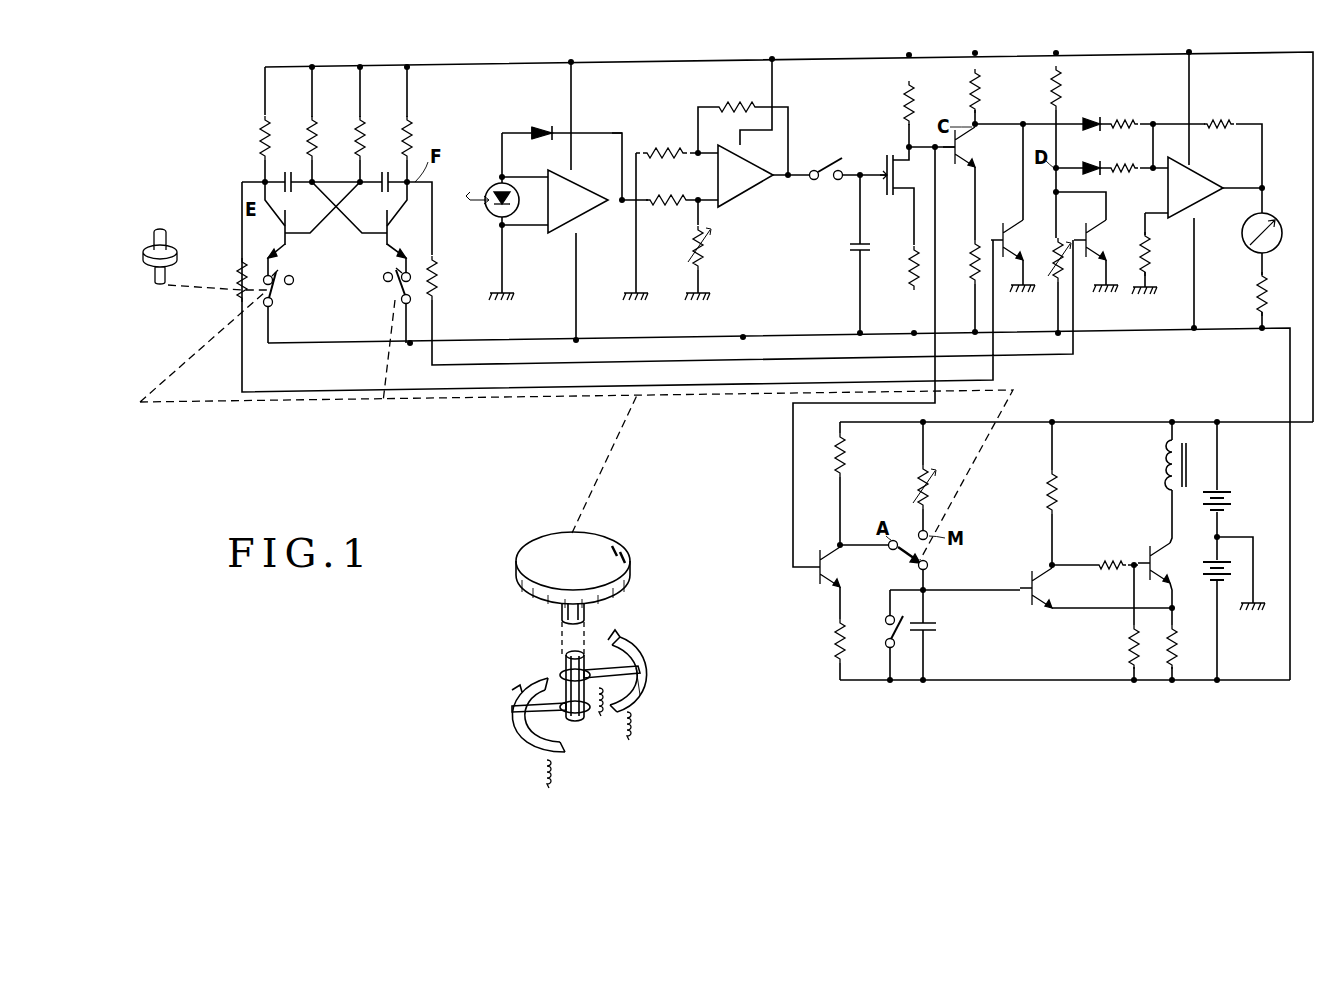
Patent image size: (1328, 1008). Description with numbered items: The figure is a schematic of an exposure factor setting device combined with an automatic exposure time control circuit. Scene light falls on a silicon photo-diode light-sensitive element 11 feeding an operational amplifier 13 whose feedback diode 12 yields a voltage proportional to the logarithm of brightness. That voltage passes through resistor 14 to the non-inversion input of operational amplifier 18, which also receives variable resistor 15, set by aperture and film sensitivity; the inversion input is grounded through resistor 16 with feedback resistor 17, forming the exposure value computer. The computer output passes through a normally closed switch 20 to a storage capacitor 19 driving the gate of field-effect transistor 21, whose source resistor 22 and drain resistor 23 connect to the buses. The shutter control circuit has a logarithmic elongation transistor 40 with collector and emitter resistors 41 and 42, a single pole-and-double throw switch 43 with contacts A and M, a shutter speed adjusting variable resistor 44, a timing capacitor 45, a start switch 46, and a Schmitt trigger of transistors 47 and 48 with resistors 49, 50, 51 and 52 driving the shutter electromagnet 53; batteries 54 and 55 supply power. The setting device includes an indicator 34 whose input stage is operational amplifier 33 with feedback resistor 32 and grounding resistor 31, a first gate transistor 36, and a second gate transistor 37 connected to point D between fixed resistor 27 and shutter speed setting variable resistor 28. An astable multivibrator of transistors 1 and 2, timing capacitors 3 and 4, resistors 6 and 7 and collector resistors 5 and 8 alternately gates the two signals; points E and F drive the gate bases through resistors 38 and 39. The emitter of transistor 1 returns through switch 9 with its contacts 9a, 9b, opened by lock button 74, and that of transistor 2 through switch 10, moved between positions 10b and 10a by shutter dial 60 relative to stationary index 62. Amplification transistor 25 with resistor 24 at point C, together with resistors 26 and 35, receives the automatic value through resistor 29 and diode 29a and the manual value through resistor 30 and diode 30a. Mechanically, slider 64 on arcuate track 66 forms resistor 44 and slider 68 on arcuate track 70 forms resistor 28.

The transistor 1 is at (290, 238).
The transistor 2 is at (384, 236).
The timing capacitor 3 is at (288, 172).
The timing capacitor 4 is at (385, 172).
The collector resistor 5 is at (262, 142).
The resistor 6 is at (315, 136).
The resistor 7 is at (362, 122).
The collector resistor 8 is at (410, 136).
The switch 9 is at (272, 300).
The switch contact 9a is at (280, 268).
The switch contact 9b is at (294, 282).
The switch 10 is at (399, 298).
The switch position 10a is at (383, 277).
The switch position 10b is at (410, 270).
The light-sensitive element 11 is at (498, 222).
The diode 12 is at (542, 124).
The operational amplifier 13 is at (578, 190).
The resistor 14 is at (664, 205).
The variable resistor 15 is at (690, 252).
The resistor 16 is at (660, 148).
The feedback resistor 17 is at (736, 100).
The operational amplifier 18 is at (750, 170).
The storage capacitor 19 is at (848, 247).
The normally closed switch 20 is at (824, 182).
The field-effect transistor 21 is at (900, 197).
The resistor 22 is at (910, 282).
The resistor 23 is at (905, 110).
The resistor 24 is at (970, 93).
The amplification transistor 25 is at (962, 151).
The resistor 26 is at (972, 282).
The fixed resistor 27 is at (1052, 90).
The variable resistor 28 is at (1052, 290).
The resistor 29 is at (1128, 118).
The diode 29a is at (1092, 118).
The resistor 30 is at (1122, 163).
The diode 30a is at (1092, 176).
The resistor 31 is at (1150, 258).
The feedback resistor 32 is at (1220, 117).
The operational amplifier 33 is at (1208, 180).
The indicator 34 is at (1275, 216).
The resistor 35 is at (1267, 296).
The transistor 36 is at (1010, 250).
The transistor 37 is at (1092, 244).
The resistor 38 is at (240, 280).
The resistor 39 is at (436, 278).
The logarithmic elongation transistor 40 is at (816, 582).
The collector stage resistor 41 is at (846, 476).
The emitter stage resistor 42 is at (846, 640).
The single pole-and-double throw switch 43 is at (929, 564).
The shutter speed adjusting variable resistor 44 is at (932, 494).
The timing capacitor 45 is at (938, 627).
The start switch 46 is at (886, 641).
The transistor 47 is at (1040, 610).
The transistor 48 is at (1160, 556).
The resistor 49 is at (1058, 492).
The resistor 50 is at (1110, 558).
The resistor 51 is at (1130, 650).
The resistor 52 is at (1176, 646).
The shutter electromagnet 53 is at (1188, 470).
The battery 54 is at (1233, 496).
The battery 55 is at (1236, 566).
The shutter dial 60 is at (514, 575).
The stationary index 62 is at (633, 533).
The slider 64 is at (617, 645).
The arcuate resistance track 66 is at (636, 662).
The slider 68 is at (552, 695).
The arcuate resistance track 70 is at (512, 700).
The lock button 74 is at (150, 236).